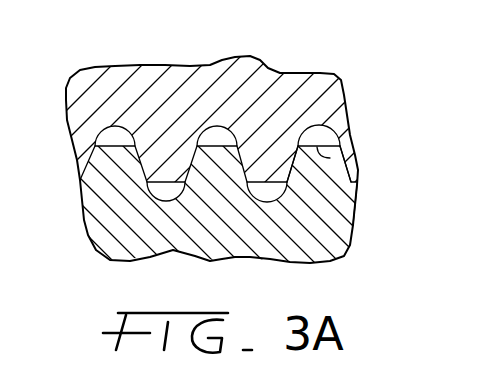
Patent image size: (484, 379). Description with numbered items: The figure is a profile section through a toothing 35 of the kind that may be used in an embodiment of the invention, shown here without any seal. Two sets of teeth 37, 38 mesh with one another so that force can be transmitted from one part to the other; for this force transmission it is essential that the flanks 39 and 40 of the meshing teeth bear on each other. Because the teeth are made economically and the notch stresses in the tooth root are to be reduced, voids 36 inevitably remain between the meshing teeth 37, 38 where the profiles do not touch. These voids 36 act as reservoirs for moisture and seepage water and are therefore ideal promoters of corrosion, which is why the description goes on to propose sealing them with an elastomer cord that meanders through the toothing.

The toothing 35 is at (350, 103).
The voids 36 is at (262, 193).
The tooth 37 is at (293, 147).
The tooth 38 is at (352, 157).
The flank 39 is at (303, 165).
The flank 40 is at (353, 203).